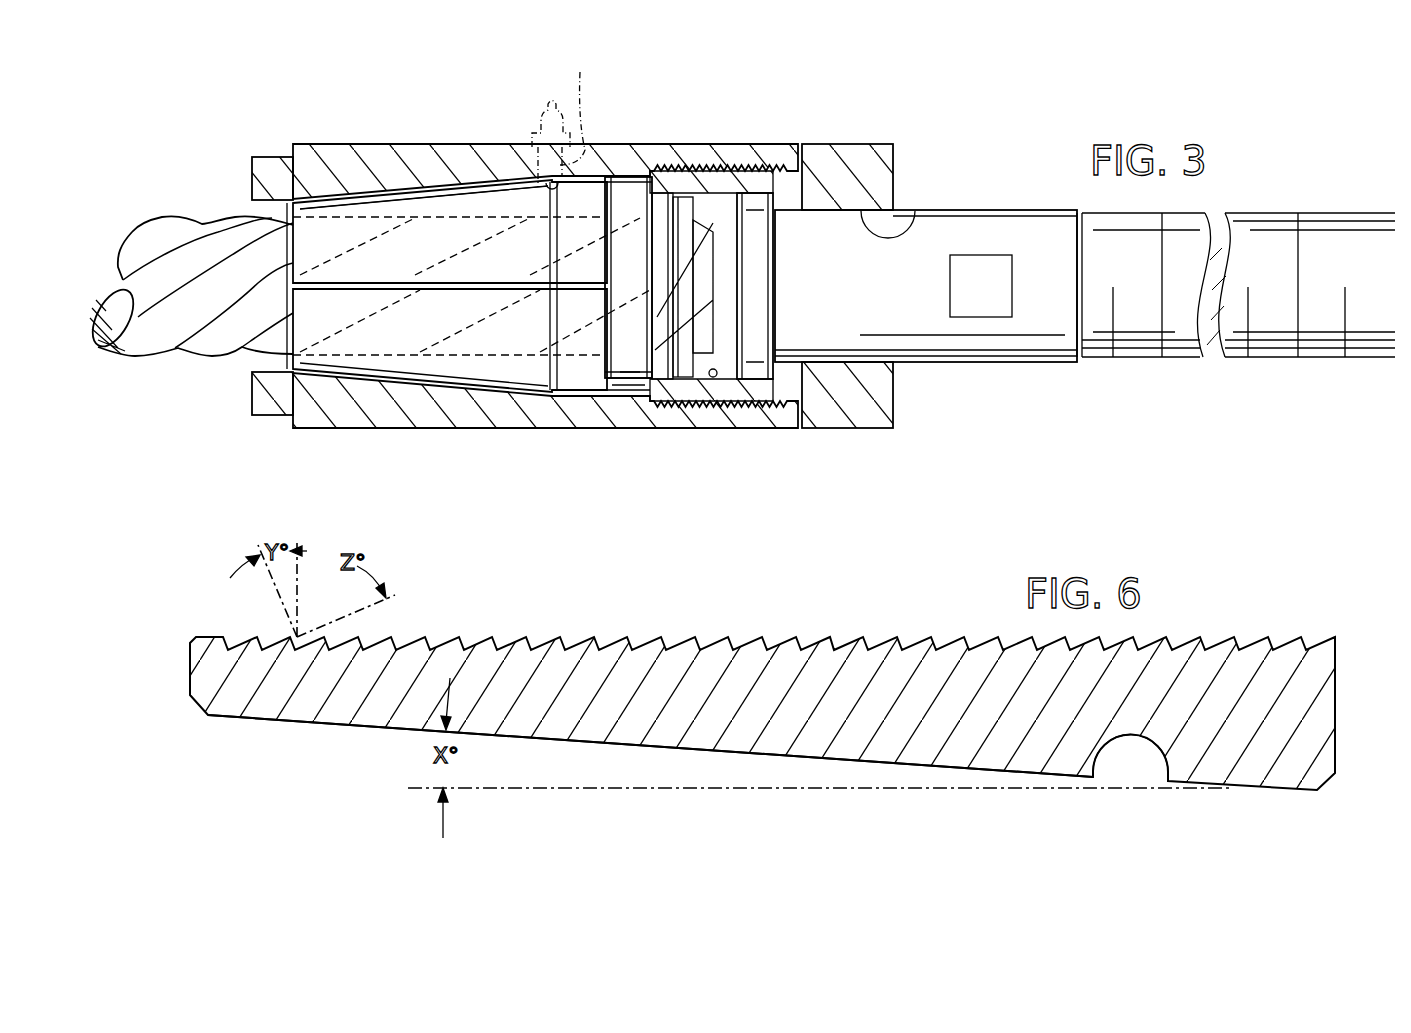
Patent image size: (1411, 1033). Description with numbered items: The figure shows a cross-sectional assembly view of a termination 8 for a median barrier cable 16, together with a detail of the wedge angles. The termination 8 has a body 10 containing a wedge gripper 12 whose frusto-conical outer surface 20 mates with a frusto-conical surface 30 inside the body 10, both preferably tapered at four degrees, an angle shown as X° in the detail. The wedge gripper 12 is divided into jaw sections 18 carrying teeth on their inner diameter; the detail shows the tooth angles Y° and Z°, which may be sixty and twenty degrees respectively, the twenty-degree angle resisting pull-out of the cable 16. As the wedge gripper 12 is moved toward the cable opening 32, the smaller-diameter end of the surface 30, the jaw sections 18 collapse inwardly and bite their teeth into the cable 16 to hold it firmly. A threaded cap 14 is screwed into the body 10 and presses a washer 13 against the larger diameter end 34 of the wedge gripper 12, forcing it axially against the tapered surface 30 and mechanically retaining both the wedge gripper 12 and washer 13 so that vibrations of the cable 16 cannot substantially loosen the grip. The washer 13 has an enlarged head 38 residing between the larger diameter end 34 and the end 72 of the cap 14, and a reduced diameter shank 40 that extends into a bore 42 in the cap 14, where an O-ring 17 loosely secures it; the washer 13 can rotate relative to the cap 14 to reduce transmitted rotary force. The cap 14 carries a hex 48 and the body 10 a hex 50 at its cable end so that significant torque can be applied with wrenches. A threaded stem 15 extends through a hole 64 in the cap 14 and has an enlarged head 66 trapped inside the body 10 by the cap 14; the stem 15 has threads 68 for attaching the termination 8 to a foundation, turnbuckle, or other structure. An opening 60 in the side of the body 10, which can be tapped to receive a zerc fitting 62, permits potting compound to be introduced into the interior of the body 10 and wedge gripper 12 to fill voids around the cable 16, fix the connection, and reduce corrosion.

In FIG. 3, the termination 8 is at (350, 98).
In FIG. 3, the body 10 is at (370, 138).
In FIG. 3, the wedge gripper 12 is at (478, 390).
In FIG. 3, the washer 13 is at (628, 392).
In FIG. 3, the threaded cap 14 is at (869, 288).
In FIG. 3, the stem 15 is at (1085, 295).
In FIG. 3, the median barrier cable 16 is at (178, 210).
In FIG. 3, the O-ring 17 is at (673, 196).
In FIG. 6, the O-ring 17 is at (1113, 748).
In FIG. 3, the jaw sections 18 is at (468, 285).
In FIG. 6, the jaw sections 18 is at (605, 730).
In FIG. 6, the frusto-conical outer surface 20 is at (318, 722).
In FIG. 3, the frusto-conical surface 30 is at (438, 185).
In FIG. 3, the cable opening 32 is at (252, 368).
In FIG. 3, the larger diameter end 34 is at (620, 377).
In FIG. 3, the enlarged head 38 is at (627, 178).
In FIG. 3, the reduced diameter shank 40 is at (687, 195).
In FIG. 3, the bore 42 is at (714, 378).
In FIG. 3, the hex 48 is at (863, 143).
In FIG. 3, the hex 50 is at (265, 157).
In FIG. 3, the opening 60 is at (577, 106).
In FIG. 3, the zerc fitting 62 is at (540, 100).
In FIG. 3, the hole 64 is at (913, 213).
In FIG. 3, the enlarged head 66 is at (757, 292).
In FIG. 3, the threads 68 is at (1313, 212).
In FIG. 3, the end 72 is at (663, 186).